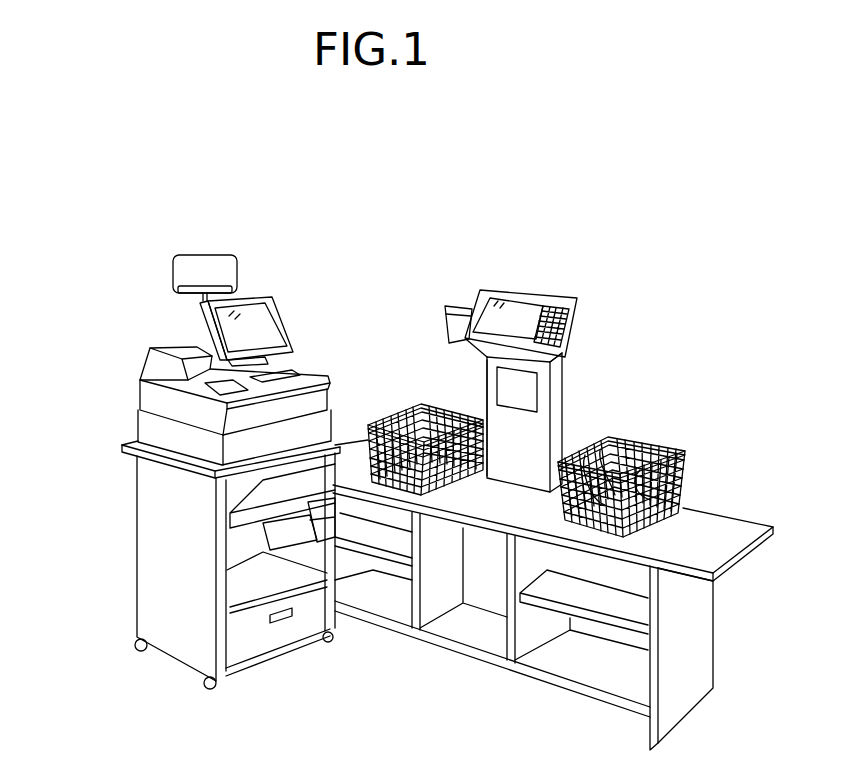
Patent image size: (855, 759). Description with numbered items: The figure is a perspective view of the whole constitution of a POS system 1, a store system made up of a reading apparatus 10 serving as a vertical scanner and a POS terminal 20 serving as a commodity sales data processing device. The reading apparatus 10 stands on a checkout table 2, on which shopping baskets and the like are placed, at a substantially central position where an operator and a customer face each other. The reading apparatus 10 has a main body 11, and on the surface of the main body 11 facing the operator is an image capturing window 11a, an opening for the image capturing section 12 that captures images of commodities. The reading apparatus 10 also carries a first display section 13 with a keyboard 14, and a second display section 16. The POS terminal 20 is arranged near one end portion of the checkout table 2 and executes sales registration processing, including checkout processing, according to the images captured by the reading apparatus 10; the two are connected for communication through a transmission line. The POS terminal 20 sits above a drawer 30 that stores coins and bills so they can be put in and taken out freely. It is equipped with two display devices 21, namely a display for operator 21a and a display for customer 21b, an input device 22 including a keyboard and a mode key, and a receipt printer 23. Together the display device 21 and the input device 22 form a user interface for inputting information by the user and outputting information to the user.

The POS system 1 is at (104, 212).
The checkout table 2 is at (740, 533).
The reading apparatus 10 is at (555, 383).
The main body 11 is at (565, 423).
The image capturing window 11a is at (492, 373).
The image capturing section 12 is at (527, 393).
The first display section 13 is at (497, 290).
The keyboard 14 is at (553, 307).
The second display section 16 is at (458, 310).
The POS terminal 20 is at (150, 397).
The display device 21 is at (333, 219).
The display for operator 21a is at (258, 315).
The display for customer 21b is at (238, 272).
The input device 22 is at (292, 367).
The receipt printer 23 is at (180, 343).
The drawer 30 is at (152, 430).